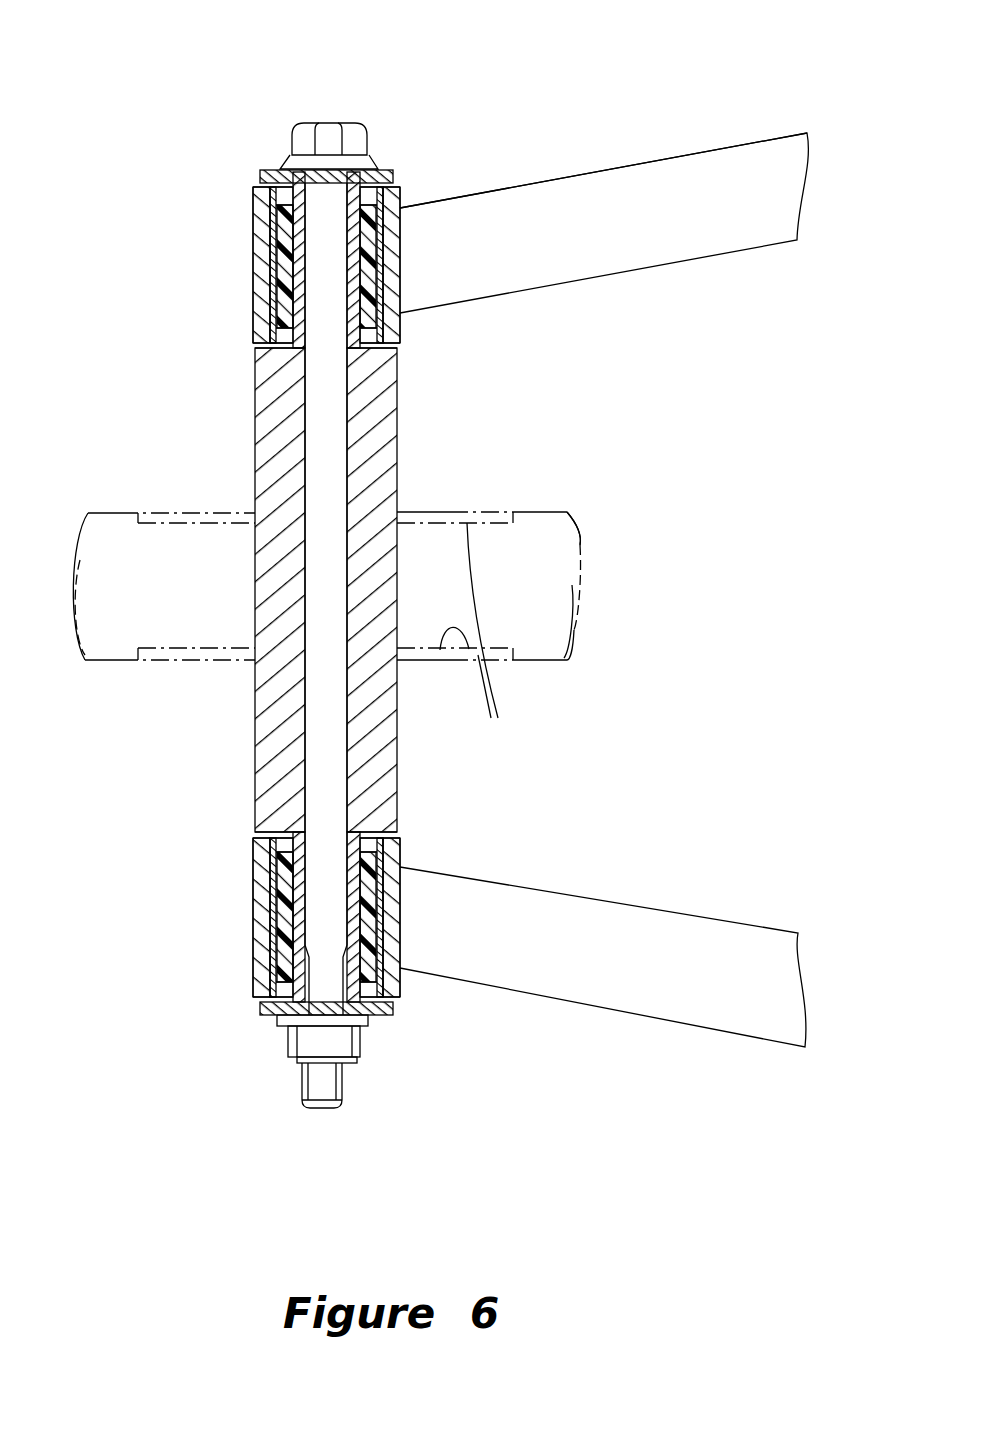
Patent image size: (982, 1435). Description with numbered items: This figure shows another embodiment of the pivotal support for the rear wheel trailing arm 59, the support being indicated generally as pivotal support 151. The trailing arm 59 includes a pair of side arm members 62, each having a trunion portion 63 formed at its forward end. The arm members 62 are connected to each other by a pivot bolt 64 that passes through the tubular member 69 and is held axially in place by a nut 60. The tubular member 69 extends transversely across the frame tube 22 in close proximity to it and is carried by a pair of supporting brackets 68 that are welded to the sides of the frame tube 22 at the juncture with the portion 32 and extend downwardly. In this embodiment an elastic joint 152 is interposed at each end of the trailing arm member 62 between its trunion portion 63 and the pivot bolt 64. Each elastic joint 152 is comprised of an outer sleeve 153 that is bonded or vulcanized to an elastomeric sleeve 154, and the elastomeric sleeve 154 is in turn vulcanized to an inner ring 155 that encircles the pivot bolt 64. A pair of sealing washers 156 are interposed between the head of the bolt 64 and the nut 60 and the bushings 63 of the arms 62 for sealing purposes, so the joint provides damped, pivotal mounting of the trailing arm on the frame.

The frame tube 22 is at (588, 687).
The portion 32 is at (553, 512).
The trailing arm assembly 59 is at (565, 139).
The nut 60 is at (300, 1048).
The side arm member 62 is at (750, 135).
The trunion portion 63 is at (263, 232).
The pivot bolt 64 is at (328, 323).
The supporting bracket 68 is at (483, 649).
The tubular member 69 is at (398, 410).
The pivotal support 151 is at (232, 432).
The elastic joint 152 is at (246, 201).
The outer sleeve 153 is at (270, 287).
The elastomeric sleeve 154 is at (367, 238).
The inner ring 155 is at (348, 252).
The sealing washer 156 is at (263, 182).